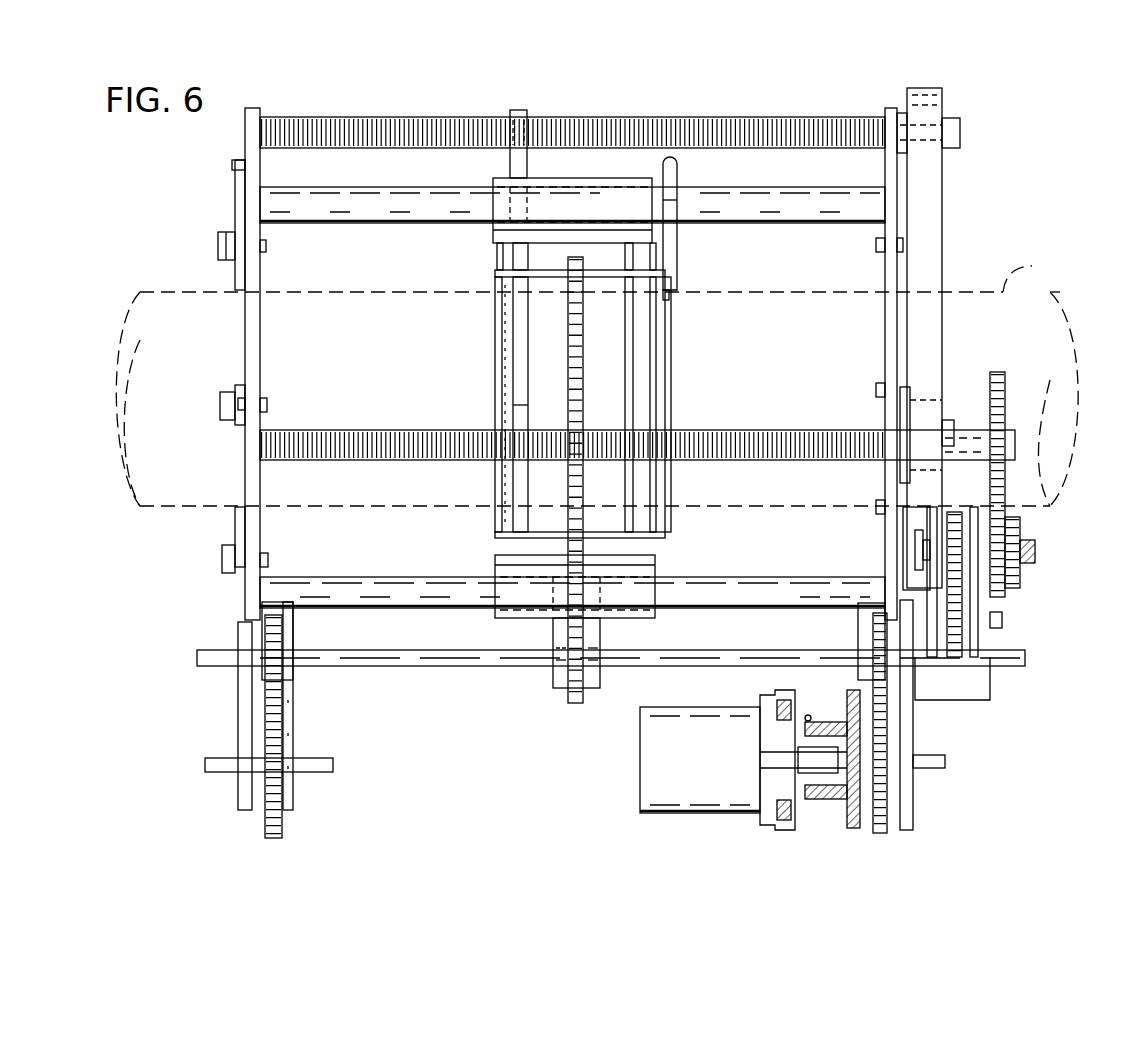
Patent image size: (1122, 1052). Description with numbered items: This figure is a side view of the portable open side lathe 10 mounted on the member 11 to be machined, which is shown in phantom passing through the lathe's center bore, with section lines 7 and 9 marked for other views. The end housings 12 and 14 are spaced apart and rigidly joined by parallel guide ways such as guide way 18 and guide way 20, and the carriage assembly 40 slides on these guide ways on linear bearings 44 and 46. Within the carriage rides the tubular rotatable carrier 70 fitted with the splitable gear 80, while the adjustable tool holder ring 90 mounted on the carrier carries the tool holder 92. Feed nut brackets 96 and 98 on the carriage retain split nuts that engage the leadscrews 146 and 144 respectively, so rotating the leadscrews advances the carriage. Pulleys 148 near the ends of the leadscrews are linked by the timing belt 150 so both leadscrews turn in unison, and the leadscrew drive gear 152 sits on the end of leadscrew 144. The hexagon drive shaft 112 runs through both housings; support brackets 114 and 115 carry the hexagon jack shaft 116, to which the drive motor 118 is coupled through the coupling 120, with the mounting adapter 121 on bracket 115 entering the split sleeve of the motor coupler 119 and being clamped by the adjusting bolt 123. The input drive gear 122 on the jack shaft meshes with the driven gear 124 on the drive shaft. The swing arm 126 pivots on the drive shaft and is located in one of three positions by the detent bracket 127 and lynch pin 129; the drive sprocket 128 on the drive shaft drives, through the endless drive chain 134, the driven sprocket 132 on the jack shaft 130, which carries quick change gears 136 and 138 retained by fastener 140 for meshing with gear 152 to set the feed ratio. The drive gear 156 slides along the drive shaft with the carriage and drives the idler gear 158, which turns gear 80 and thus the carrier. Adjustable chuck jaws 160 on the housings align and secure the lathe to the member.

The section line 7- 7 is at (983, 82).
The section line 9- 9 is at (760, 680).
The portable open side lathe 10 is at (556, 795).
The member to be machined 11 is at (597, 380).
The end housing 12 is at (885, 120).
The end housing 14 is at (245, 325).
The guide way 18 is at (797, 212).
The guide way 20 is at (757, 602).
The carriage assembly 40 is at (530, 645).
The linear bearing 44 is at (572, 178).
The linear bearing 46 is at (528, 620).
The rotatable carrier 70 is at (618, 378).
The gear 80 is at (565, 525).
The adjustable tool holder ring 90 is at (671, 330).
The adjustable tool holder 92 is at (677, 236).
The linear feed nut bracket 96 is at (522, 110).
The linear feed nut bracket 98 is at (513, 466).
The hexagon drive shaft 112 is at (460, 667).
The support bracket 114 is at (238, 695).
The support bracket 115 is at (293, 712).
The hexagon jack shaft 116 is at (315, 772).
The drive motor 118 is at (712, 813).
The motor coupler 119 is at (800, 825).
The coupling 120 is at (828, 775).
The mounting adapter 121 is at (853, 830).
The input drive gear 122 is at (282, 818).
The adjusting bolt 123 is at (805, 720).
The driven gear 124 is at (280, 680).
The swing arm 126 is at (937, 632).
The detent bracket 127 is at (975, 665).
The drive sprocket 128 is at (982, 700).
The lynch pin 129 is at (1002, 620).
The jack shaft 130 is at (918, 540).
The driven sprocket 132 is at (975, 512).
The endless drive chain 134 is at (955, 660).
The quick change gear 136 is at (1003, 598).
The quick change gear 138 is at (1020, 565).
The fastener 140 is at (1036, 550).
The leadscrew 144 is at (752, 430).
The leadscrew 146 is at (682, 118).
The pulley 148 is at (942, 98).
The timing belt 150 is at (942, 222).
The leadscrew drive gear 152 is at (1005, 405).
The drive gear 156 is at (568, 712).
The idler gear 158 is at (595, 598).
The adjustable chuck jaw 160 is at (238, 215).